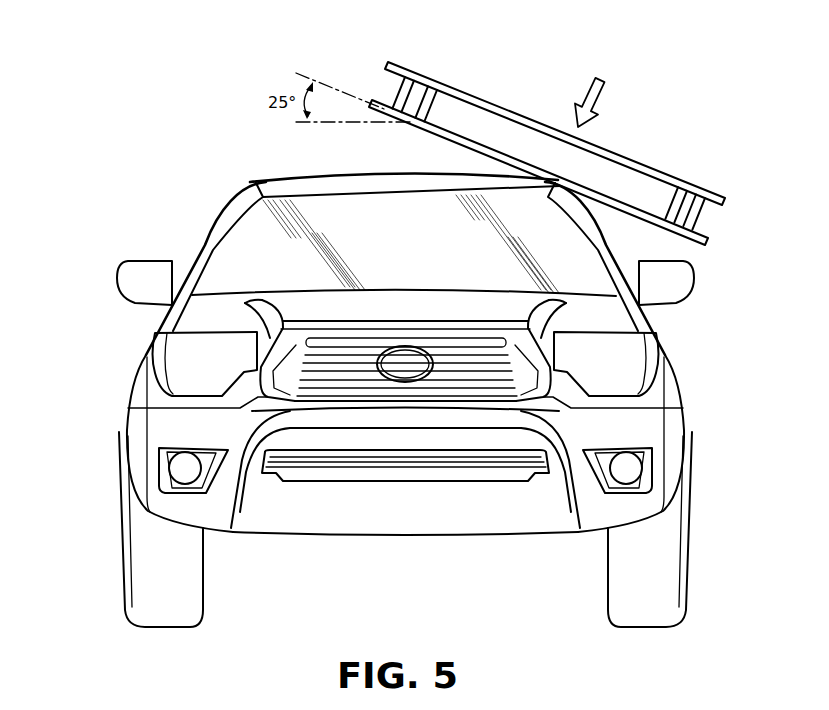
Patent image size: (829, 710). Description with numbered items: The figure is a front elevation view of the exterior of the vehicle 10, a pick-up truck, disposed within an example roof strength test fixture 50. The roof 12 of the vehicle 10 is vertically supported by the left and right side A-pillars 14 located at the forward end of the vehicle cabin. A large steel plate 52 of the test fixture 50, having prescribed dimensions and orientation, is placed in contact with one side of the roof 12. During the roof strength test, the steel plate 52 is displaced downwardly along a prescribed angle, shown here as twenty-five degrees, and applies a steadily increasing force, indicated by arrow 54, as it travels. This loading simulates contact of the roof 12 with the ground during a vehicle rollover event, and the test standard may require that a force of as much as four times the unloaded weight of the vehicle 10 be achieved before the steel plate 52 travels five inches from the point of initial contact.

The vehicle 10 is at (140, 231).
The roof 12 is at (420, 184).
The A-pillars 14 is at (208, 248).
The roof strength test fixture 50 is at (473, 88).
The steel plate 52 is at (645, 163).
The arrow 54 is at (603, 101).